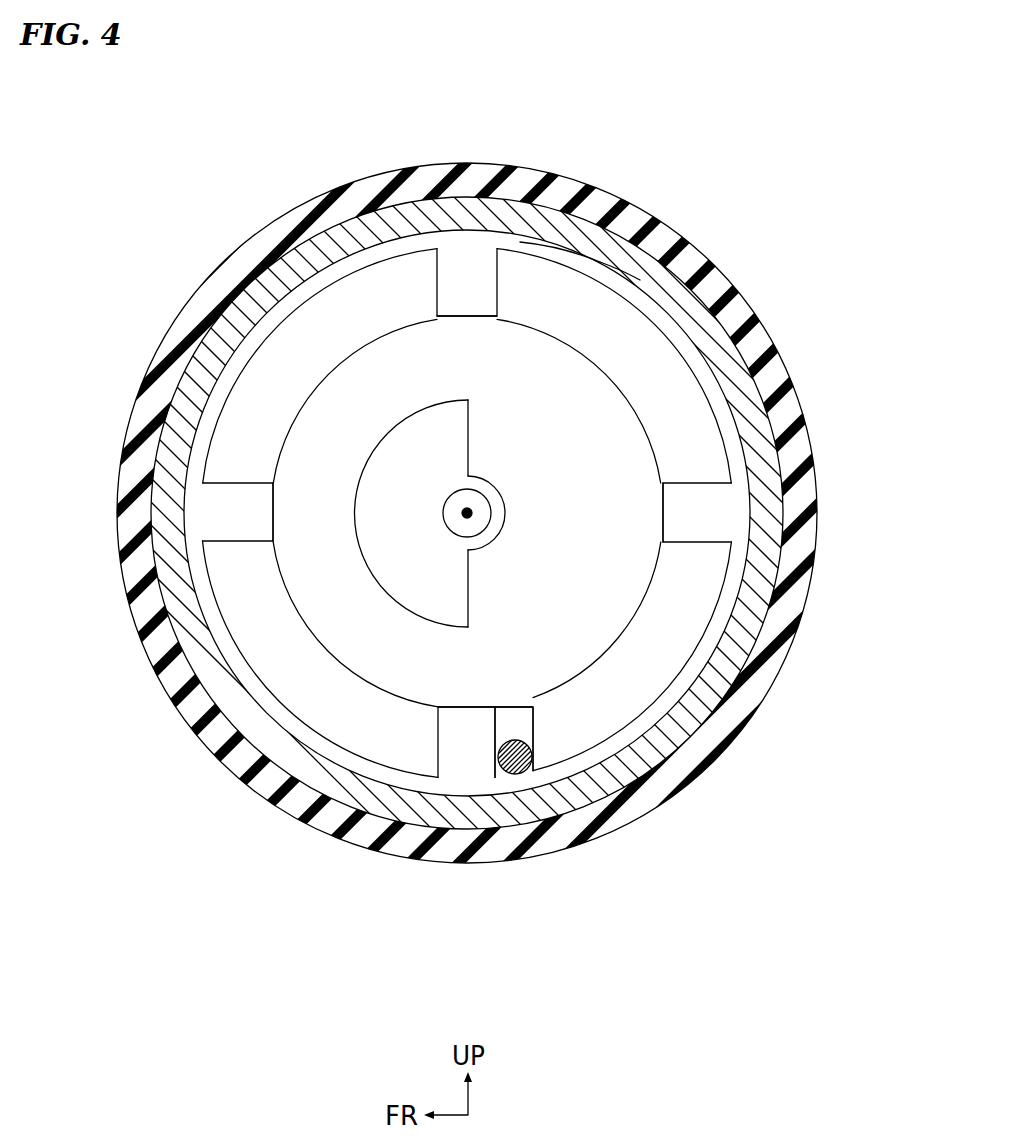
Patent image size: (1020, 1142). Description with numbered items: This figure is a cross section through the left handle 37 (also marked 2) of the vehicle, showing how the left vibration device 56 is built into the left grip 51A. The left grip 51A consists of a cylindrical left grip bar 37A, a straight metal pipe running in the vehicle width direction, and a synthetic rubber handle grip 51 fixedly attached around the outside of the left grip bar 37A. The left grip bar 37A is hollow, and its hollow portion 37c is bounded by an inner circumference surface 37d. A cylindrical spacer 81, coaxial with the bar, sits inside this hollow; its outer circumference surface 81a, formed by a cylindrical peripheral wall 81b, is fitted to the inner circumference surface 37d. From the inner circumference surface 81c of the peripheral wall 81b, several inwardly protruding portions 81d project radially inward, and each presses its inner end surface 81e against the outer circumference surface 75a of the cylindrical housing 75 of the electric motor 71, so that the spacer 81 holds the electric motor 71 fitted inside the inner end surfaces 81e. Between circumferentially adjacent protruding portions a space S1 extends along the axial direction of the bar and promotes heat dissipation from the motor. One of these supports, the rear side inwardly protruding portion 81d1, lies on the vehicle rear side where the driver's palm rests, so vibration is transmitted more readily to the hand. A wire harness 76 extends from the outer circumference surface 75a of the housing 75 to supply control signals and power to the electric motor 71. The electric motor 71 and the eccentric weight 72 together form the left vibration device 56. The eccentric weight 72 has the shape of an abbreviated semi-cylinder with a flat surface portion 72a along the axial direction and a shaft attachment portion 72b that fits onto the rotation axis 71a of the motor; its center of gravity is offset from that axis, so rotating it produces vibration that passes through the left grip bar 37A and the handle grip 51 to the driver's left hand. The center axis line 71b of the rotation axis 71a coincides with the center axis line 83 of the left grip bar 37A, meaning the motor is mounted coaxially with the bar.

The device 2 is at (510, 571).
The left handle 37 is at (510, 571).
The handle grip 51 is at (467, 491).
The left grip 51A is at (287, 227).
The left grip bar 37A is at (247, 278).
The hollow portion 37c is at (561, 296).
The inner circumference surface 37d is at (630, 274).
The spacer 81 is at (510, 571).
The outer circumference surface 81a is at (544, 513).
The peripheral wall 81b is at (714, 367).
The inner circumference surface 81c is at (736, 600).
The inwardly protruding portions 81d is at (460, 514).
The rear side inwardly protruding portion 81d1 is at (776, 441).
The inner end surface 81e is at (274, 510).
The space S1 is at (268, 396).
The left vibration device 56 is at (351, 581).
The electric motor 71 is at (379, 543).
The rotation axis 71a is at (481, 502).
The center axis line 71b is at (541, 533).
The center axis line 83 is at (475, 513).
The eccentric weight 72 is at (323, 619).
The flat surface portion 72a is at (472, 612).
The shaft attachment portion 72b is at (489, 547).
The housing 75 is at (510, 571).
The outer circumference surface 75a is at (510, 571).
The wire harness 76 is at (528, 765).